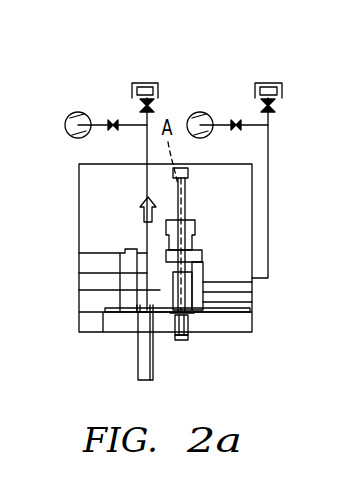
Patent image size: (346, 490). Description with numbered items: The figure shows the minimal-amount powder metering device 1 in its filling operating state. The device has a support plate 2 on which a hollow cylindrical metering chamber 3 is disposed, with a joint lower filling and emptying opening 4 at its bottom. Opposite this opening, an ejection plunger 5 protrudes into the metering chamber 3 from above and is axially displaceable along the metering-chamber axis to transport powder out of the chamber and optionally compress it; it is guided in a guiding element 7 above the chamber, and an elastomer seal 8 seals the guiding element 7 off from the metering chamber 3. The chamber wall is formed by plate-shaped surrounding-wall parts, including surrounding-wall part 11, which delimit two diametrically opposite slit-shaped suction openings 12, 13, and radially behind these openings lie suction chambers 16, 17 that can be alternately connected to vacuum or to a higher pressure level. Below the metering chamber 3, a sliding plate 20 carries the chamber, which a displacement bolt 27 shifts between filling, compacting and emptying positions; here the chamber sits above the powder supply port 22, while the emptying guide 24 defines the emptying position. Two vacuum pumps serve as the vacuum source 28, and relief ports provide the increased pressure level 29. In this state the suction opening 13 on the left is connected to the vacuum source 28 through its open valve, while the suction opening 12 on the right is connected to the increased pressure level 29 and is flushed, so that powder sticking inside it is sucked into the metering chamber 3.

The metering device 1 is at (188, 75).
The support plate 2 is at (120, 333).
The metering chamber 3 is at (188, 315).
The filling and emptying opening 4 is at (176, 315).
The ejection plunger 5 is at (190, 192).
The guiding element 7 is at (197, 224).
The elastomer seal 8 is at (203, 254).
The surrounding-wall part 11 is at (248, 310).
The suction opening 12 is at (205, 298).
The suction opening 13 is at (140, 269).
The suction chamber 16 is at (203, 274).
The suction chamber 17 is at (160, 298).
The sliding plate 20 is at (103, 312).
The powder supply port 22 is at (182, 340).
The emptying guide 24 is at (140, 365).
The displacement bolt 27 is at (105, 250).
The vacuum source 28 is at (80, 118).
The increased pressure level 29 is at (144, 88).